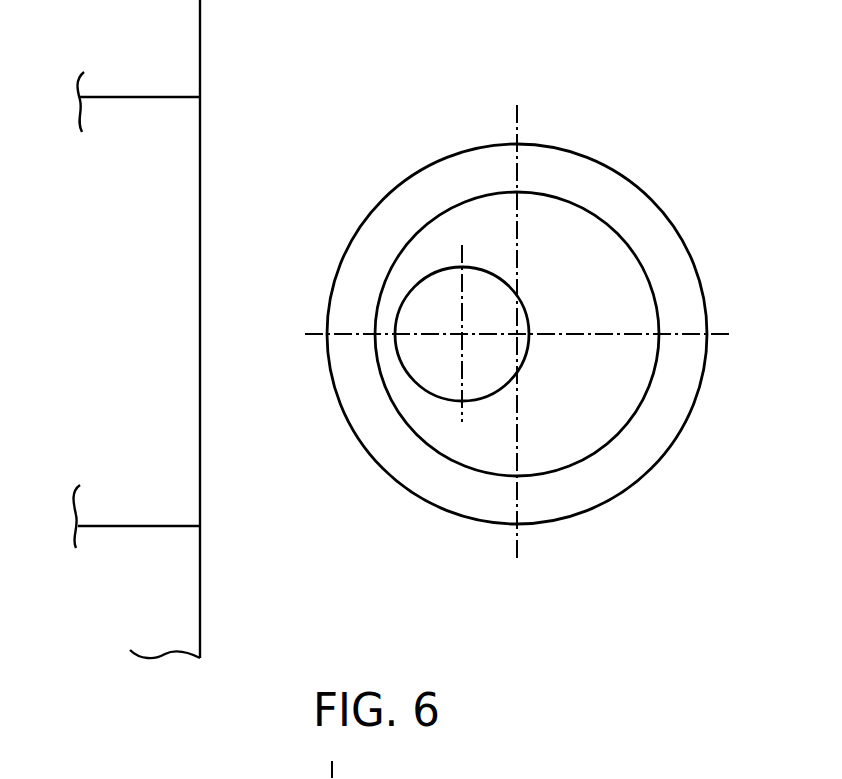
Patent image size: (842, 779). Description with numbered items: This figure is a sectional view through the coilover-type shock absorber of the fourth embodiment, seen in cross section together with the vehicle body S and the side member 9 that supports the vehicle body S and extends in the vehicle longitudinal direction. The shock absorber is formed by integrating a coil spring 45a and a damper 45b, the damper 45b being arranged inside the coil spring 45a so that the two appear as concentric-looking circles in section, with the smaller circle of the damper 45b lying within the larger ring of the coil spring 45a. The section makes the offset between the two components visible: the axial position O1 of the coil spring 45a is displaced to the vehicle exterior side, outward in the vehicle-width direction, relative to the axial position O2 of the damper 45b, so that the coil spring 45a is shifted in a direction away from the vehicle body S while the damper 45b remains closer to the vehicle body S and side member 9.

The vehicle body S is at (203, 62).
The side member 9 is at (143, 282).
The coil spring 45a is at (656, 246).
The damper 45b is at (432, 398).
The axial position of the coil spring O1 is at (517, 334).
The axial position of the damper O2 is at (462, 334).